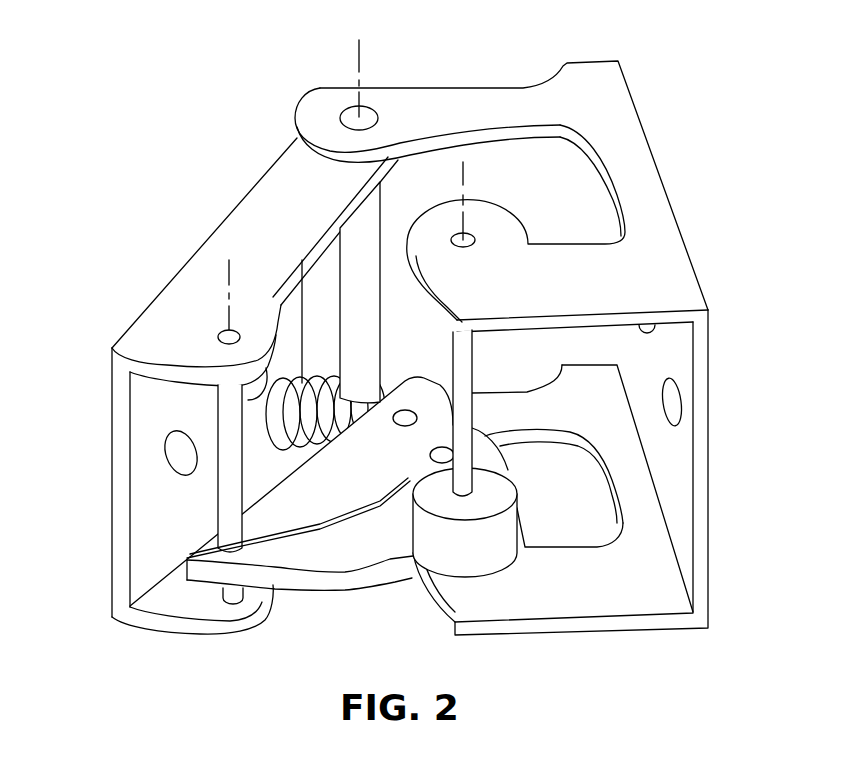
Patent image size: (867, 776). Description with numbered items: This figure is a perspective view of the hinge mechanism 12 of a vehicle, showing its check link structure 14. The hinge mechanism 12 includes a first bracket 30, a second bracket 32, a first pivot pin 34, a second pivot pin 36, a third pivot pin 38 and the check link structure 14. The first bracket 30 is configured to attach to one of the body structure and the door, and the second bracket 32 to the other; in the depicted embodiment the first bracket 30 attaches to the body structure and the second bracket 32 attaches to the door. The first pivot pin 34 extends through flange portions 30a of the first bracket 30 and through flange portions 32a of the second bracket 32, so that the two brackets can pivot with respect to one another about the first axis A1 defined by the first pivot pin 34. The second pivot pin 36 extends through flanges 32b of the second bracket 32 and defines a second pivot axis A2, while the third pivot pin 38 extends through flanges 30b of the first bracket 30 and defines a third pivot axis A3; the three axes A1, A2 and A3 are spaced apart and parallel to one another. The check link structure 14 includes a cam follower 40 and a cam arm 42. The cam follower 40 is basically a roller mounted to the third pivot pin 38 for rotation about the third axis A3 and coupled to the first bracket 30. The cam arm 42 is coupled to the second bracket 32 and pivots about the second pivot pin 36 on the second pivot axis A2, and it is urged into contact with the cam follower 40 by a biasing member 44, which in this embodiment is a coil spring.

The hinge mechanism 12 is at (470, 52).
The check link structure 14 is at (352, 562).
The first bracket 30 is at (472, 348).
The flange portions 30a is at (317, 107).
The flanges 30b is at (495, 230).
The second bracket 32 is at (295, 413).
The flange portions 32a is at (312, 175).
The flanges 32b is at (173, 332).
The first pivot pin 34 is at (362, 233).
The second pivot pin 36 is at (228, 483).
The third pivot pin 38 is at (463, 365).
The cam follower 40 is at (483, 542).
The cam arm 42 is at (370, 552).
The biasing member 44 is at (330, 408).
The first axis A1 is at (360, 57).
The second pivot axis A2 is at (229, 274).
The third pivot axis A3 is at (463, 168).